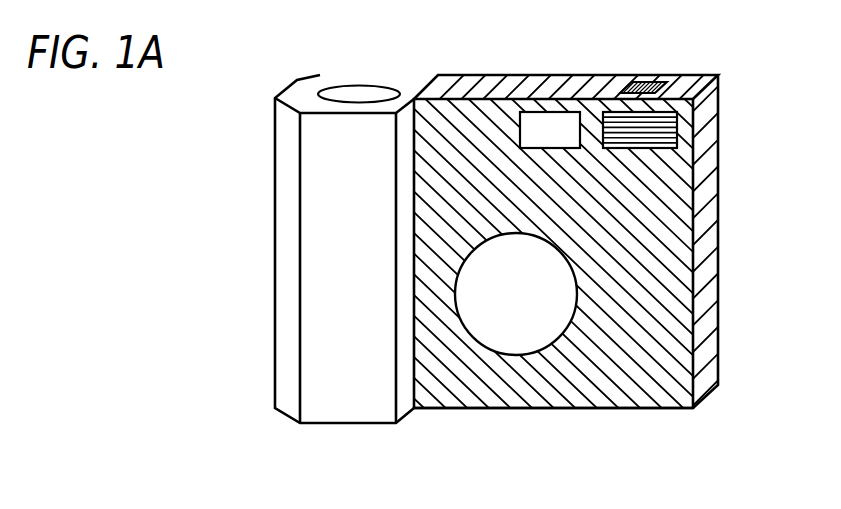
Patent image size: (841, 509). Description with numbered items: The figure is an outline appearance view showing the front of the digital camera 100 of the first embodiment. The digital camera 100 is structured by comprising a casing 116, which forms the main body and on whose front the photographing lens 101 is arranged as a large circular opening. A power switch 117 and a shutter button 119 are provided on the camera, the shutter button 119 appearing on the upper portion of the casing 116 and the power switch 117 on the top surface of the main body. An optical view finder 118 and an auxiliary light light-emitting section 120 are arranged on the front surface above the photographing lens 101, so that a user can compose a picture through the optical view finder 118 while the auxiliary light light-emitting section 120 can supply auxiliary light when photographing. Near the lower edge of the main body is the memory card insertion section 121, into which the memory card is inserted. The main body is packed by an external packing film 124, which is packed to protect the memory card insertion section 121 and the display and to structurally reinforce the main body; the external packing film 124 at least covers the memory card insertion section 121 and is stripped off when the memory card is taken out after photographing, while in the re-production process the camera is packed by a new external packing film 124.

The digital camera 100 is at (538, 487).
The photographing lens 101 is at (513, 333).
The casing 116 is at (317, 245).
The power switch 117 is at (644, 83).
The optical view finder 118 is at (548, 118).
The shutter button 119 is at (363, 93).
The auxiliary light light-emitting section 120 is at (677, 130).
The memory card insertion section 121 is at (660, 422).
The external packing film 124 is at (710, 283).